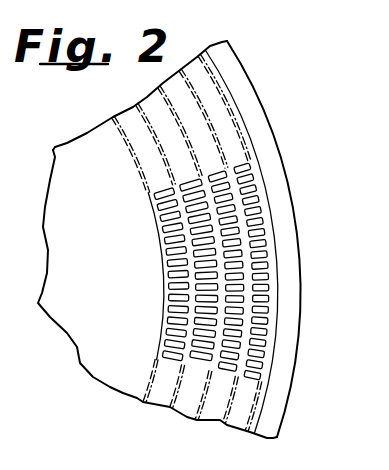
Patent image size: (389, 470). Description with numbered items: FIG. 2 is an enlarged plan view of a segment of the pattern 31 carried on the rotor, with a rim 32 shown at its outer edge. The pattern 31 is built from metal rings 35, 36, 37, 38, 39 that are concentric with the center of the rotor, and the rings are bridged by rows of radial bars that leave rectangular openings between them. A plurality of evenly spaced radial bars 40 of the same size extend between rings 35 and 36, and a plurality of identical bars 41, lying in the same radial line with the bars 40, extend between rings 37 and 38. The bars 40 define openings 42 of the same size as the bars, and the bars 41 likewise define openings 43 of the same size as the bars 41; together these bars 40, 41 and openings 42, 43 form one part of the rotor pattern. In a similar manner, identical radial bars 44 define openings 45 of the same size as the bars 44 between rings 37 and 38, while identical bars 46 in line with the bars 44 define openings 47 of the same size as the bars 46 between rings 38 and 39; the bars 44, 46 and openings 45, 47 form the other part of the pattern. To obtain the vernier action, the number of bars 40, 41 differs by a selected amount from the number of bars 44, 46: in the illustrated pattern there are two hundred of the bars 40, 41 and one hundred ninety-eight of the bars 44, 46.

The pattern 31 is at (272, 196).
The outer rim 32 is at (292, 220).
The metal ring 35 is at (252, 431).
The metal ring 36 is at (227, 424).
The metal ring 37 is at (198, 420).
The metal ring 38 is at (172, 407).
The metal ring 39 is at (146, 401).
The radial bars 40 is at (204, 258).
The bars 41 is at (232, 385).
The openings 42 is at (266, 233).
The openings 43 is at (237, 356).
The radial bars 44 is at (208, 356).
The openings 45 is at (198, 352).
The bars 46 is at (166, 208).
The openings 47 is at (163, 221).